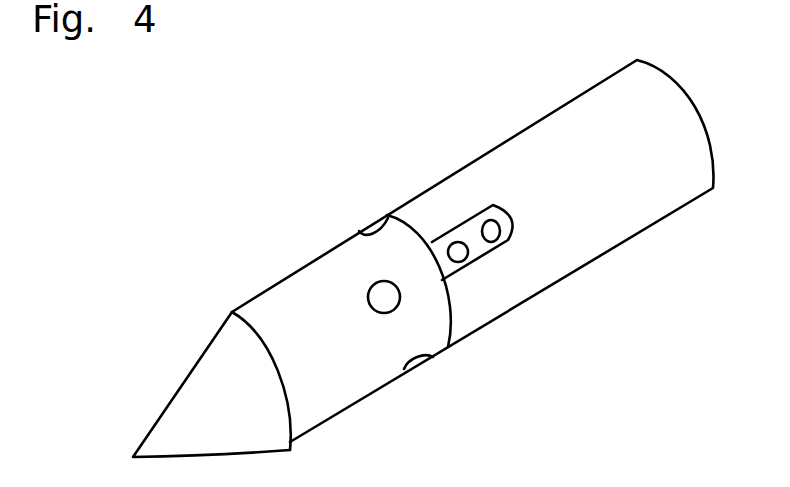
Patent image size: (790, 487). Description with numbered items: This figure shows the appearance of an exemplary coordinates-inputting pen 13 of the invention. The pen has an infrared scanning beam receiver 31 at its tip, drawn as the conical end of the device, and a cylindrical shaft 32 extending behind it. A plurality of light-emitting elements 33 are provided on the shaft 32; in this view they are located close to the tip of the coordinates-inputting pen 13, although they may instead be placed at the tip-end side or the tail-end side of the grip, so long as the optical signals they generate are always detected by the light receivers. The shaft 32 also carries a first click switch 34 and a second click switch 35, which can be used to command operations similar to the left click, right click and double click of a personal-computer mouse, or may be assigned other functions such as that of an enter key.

The coordinates-inputting pen 13 is at (417, 250).
The infrared scanning beam receiver 31 is at (205, 395).
The shaft 32 is at (553, 157).
The light-emitting elements 33 is at (363, 231).
The first click switch 34 is at (462, 258).
The second click switch 35 is at (497, 235).